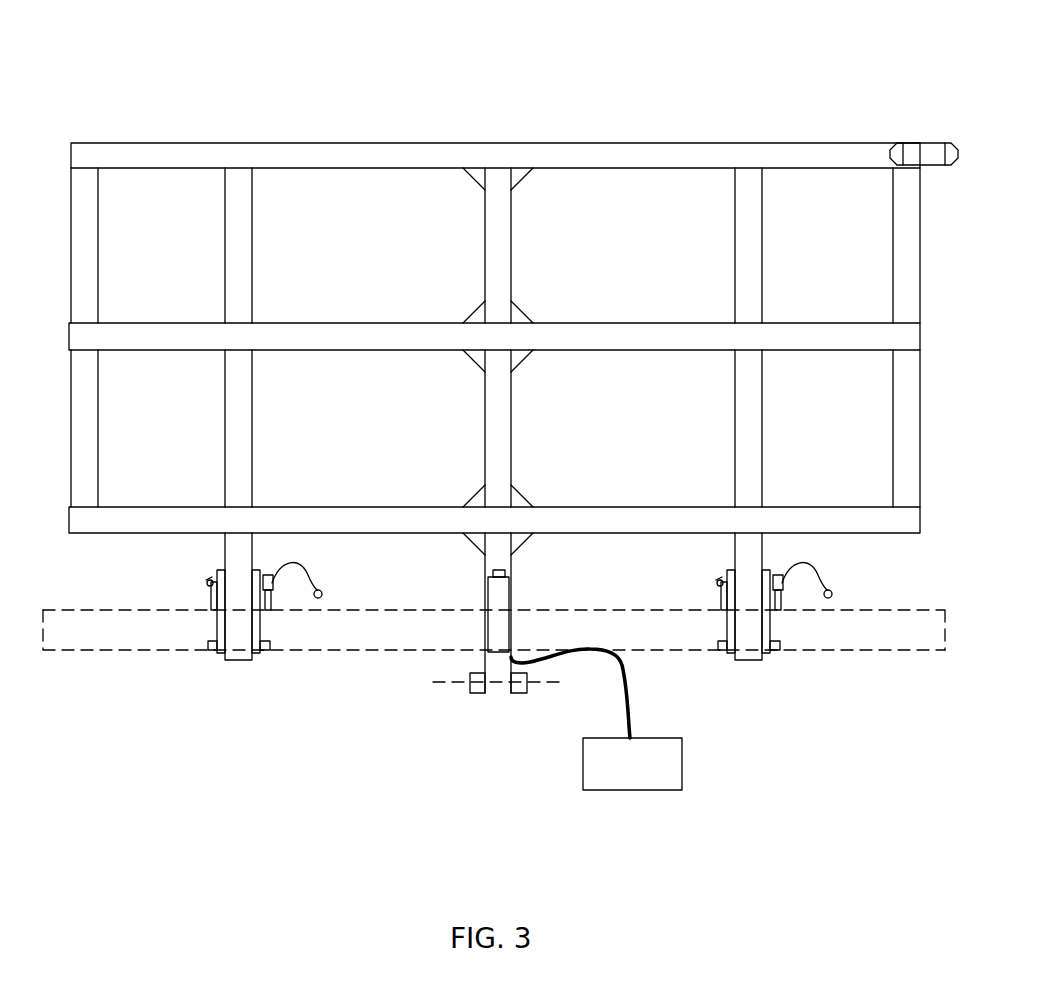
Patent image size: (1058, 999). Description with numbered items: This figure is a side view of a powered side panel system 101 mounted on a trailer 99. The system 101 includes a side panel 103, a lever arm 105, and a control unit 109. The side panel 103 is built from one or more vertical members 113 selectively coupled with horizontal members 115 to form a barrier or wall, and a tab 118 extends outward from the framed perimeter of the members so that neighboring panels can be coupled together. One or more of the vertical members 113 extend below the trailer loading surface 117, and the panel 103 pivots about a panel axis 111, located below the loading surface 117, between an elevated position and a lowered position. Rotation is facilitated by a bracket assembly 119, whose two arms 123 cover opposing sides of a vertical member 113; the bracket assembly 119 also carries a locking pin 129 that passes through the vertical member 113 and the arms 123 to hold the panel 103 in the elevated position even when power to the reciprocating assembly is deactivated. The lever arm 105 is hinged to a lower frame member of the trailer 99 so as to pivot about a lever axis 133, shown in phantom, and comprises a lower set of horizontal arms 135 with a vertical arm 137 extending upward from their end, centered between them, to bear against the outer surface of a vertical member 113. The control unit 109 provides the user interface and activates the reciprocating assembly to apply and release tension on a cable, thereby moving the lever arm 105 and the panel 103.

The powered side panel system 101 is at (319, 38).
The side panel 103 is at (484, 128).
The lever arm 105 is at (484, 719).
The control unit 109 is at (652, 779).
The panel axis 111 is at (183, 653).
The vertical member 113 is at (225, 283).
The horizontal member 115 is at (697, 143).
The trailer loading surface 117 is at (920, 610).
The tab 118 is at (930, 150).
The bracket assembly 119 is at (268, 672).
The arm 123 is at (217, 614).
The locking pin 129 is at (778, 600).
The lever axis 133 is at (455, 682).
The horizontal arm 135 is at (470, 688).
The vertical arm 137 is at (497, 600).
The trailer 99 is at (88, 655).